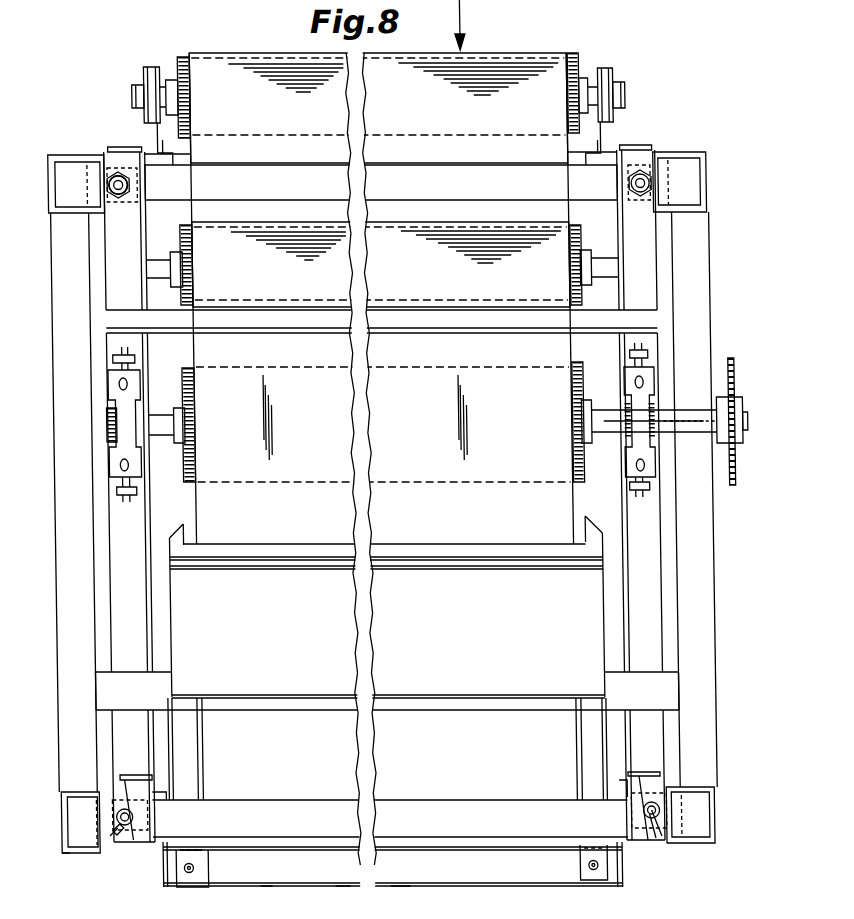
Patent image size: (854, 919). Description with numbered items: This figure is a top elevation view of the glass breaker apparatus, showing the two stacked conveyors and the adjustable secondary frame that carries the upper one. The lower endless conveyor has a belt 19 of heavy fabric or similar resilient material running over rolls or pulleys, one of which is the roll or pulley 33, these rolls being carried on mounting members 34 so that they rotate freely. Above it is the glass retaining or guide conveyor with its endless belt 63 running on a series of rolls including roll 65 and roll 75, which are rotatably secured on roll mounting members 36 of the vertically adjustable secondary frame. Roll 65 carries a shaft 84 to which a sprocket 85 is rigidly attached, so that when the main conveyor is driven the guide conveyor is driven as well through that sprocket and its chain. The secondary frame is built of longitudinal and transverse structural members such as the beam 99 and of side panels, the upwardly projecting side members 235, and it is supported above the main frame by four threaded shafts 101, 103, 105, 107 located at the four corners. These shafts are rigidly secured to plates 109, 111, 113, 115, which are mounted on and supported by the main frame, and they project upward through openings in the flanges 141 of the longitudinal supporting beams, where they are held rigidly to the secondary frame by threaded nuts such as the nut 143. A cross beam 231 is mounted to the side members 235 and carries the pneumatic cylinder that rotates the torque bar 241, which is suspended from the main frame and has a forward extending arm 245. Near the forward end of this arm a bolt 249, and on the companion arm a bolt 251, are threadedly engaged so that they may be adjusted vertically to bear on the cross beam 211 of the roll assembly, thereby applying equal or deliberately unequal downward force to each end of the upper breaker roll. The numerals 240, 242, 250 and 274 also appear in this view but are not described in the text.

The belt 19 is at (524, 54).
The roll or pulley 33 is at (577, 62).
The mounting member 34 is at (146, 74).
The roll mounting member 36 is at (143, 478).
The endless belt 63 is at (552, 221).
The roll 65 is at (174, 450).
The roll 75 is at (181, 229).
The shaft 84 is at (681, 433).
The sprocket 85 is at (731, 376).
The beam 99 is at (513, 318).
The threaded shaft 101 is at (125, 175).
The threaded shaft 103 is at (108, 826).
The threaded shaft 105 is at (650, 831).
The threaded shaft 107 is at (638, 165).
The plate 109 is at (62, 180).
The plate 111 is at (63, 819).
The plate 113 is at (693, 824).
The plate 115 is at (692, 174).
The flange 141 is at (109, 748).
The threaded nut 143 is at (118, 175).
The cross beam 211 is at (472, 872).
The cross beam 231 is at (294, 812).
The side member 235 is at (133, 842).
The plate member 240 is at (408, 902).
The torque bar 241 is at (672, 690).
The frame member 242 is at (19, 912).
The arm 245 is at (583, 738).
The bolt 249 is at (182, 872).
The plate member 250 is at (274, 902).
The bolt 251 is at (586, 868).
The plate member 274 is at (354, 902).